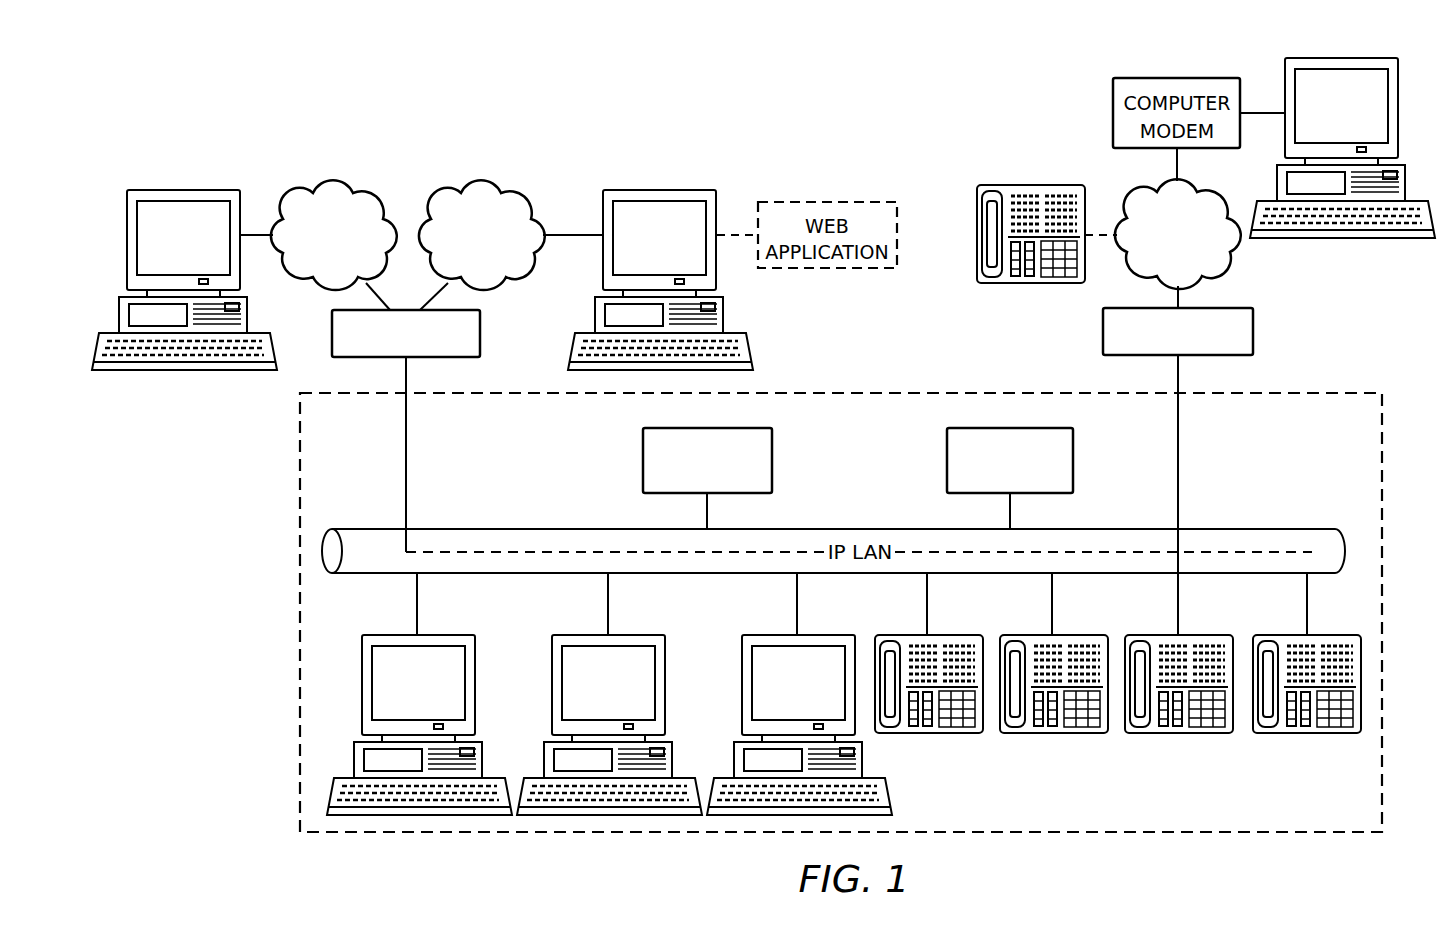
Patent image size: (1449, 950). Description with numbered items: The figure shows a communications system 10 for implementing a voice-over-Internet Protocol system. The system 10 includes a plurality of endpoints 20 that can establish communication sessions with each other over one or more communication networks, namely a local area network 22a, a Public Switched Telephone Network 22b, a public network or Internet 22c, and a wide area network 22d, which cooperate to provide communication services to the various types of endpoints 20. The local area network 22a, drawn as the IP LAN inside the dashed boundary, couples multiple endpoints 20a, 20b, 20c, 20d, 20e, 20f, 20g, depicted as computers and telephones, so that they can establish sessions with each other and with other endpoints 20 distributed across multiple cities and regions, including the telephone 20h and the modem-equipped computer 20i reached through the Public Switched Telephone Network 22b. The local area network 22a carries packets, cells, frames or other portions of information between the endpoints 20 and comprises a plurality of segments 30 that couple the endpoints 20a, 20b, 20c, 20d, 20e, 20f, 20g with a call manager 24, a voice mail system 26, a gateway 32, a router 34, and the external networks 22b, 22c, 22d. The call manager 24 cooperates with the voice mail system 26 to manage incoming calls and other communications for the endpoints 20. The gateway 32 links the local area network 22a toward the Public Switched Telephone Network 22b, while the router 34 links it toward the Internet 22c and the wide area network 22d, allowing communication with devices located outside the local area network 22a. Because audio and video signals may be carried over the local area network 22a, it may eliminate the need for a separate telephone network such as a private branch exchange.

The communications system 10 is at (293, 83).
The endpoints 20 is at (187, 190).
The endpoint 20a is at (392, 633).
The endpoint 20b is at (630, 633).
The endpoint 20c is at (823, 633).
The endpoint 20d is at (930, 735).
The endpoint 20e is at (1055, 735).
The endpoint 20f is at (1180, 735).
The endpoint 20g is at (1305, 735).
The endpoint 20h is at (1013, 183).
The endpoint 20i is at (1343, 58).
The local area network (LAN) 22a is at (918, 392).
The Public Switched Telephone Network (PSTN) 22b is at (1135, 202).
The public network (Internet) 22c is at (470, 182).
The wide area network (WAN) 22d is at (323, 182).
The call manager 24 is at (1075, 455).
The voice mail system 26 is at (642, 455).
The segments 30 is at (404, 455).
The gateway 32 is at (1253, 330).
The router 34 is at (480, 328).